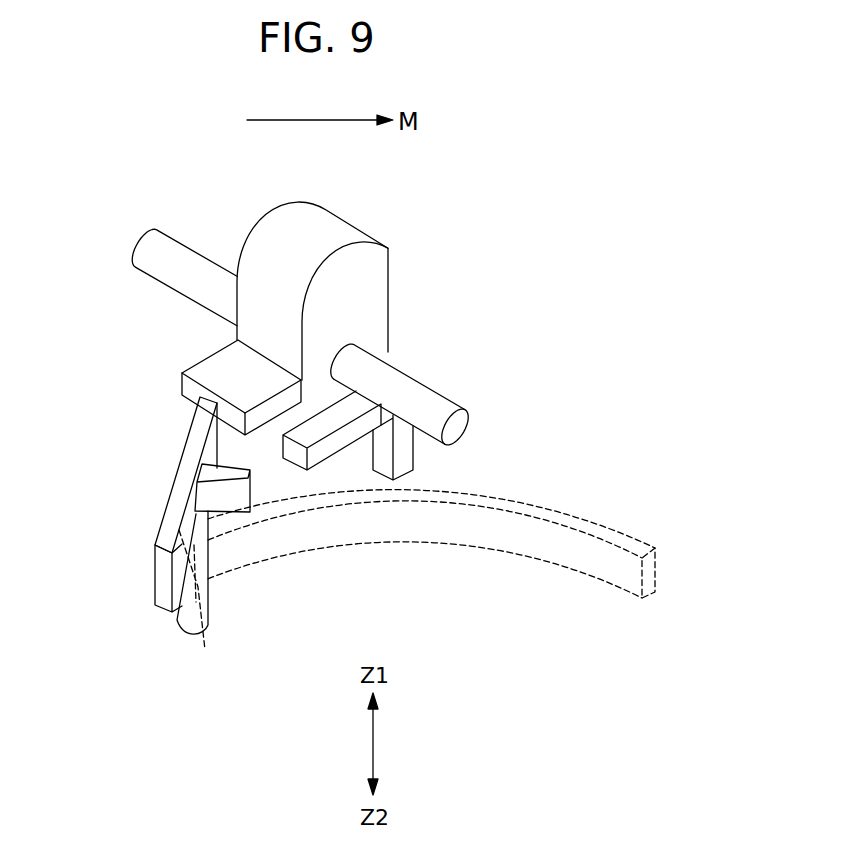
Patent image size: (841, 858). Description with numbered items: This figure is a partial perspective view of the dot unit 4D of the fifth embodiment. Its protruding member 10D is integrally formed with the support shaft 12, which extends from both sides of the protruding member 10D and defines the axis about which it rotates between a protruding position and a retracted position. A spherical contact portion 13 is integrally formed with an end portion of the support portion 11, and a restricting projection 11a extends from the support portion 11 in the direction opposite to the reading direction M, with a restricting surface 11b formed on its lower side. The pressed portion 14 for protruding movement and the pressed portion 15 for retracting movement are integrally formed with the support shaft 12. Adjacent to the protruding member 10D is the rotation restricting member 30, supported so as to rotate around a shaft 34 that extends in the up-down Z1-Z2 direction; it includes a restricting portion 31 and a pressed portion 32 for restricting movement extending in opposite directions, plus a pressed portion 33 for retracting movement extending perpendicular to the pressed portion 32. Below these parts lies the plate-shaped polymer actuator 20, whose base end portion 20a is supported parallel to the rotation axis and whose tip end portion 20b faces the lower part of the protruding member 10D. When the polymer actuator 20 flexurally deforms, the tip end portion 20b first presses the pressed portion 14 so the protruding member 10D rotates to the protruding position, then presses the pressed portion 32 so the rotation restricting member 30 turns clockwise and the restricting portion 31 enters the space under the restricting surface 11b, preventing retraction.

The dot unit 4D is at (407, 222).
The protruding member 10D is at (404, 309).
The support portion 11 is at (392, 350).
The restricting projection 11a is at (208, 371).
The restricting surface 11b is at (182, 408).
The support shaft 12 is at (435, 403).
The contact portion 13 is at (313, 226).
The pressed portion for protruding movement 14 is at (343, 437).
The pressed portion for retracting movement 15 is at (407, 458).
The polymer actuator 20 is at (473, 535).
The base end portion 20a is at (622, 577).
The tip end portion 20b is at (205, 650).
The rotation restricting member 30 is at (159, 518).
The restricting portion 31 is at (182, 450).
The pressed portion for restricting movement 32 is at (168, 568).
The pressed portion for retracting movement 33 is at (250, 490).
The shaft 34 is at (210, 593).